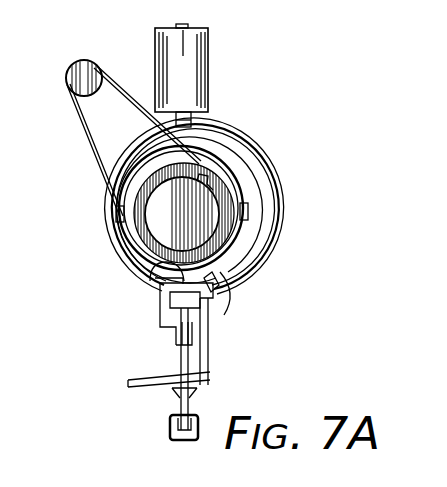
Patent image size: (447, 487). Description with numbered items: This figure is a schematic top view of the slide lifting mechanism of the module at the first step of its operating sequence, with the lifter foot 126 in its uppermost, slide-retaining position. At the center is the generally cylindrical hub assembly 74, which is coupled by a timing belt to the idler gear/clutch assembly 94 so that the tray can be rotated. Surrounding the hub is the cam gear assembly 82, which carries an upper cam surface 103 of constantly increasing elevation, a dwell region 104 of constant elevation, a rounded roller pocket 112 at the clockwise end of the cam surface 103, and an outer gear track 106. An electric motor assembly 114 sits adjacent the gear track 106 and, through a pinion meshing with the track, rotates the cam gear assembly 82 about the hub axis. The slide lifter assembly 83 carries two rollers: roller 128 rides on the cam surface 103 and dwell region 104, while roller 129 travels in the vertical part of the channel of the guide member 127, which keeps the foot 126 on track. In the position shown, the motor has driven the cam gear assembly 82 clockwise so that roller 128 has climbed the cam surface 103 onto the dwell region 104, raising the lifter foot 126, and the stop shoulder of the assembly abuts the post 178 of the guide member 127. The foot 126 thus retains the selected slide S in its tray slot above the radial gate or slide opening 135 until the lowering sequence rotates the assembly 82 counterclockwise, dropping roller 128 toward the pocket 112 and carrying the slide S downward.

The idler gear/clutch assembly 94 is at (101, 55).
The upper cam surface 103 is at (118, 206).
The electric motor assembly 114 is at (208, 62).
The gear track 106 is at (321, 160).
The cam gear assembly 82 is at (259, 197).
The slide lifter assembly 83 is at (226, 262).
The dwell region 104 is at (116, 240).
The roller pocket 112 is at (131, 160).
The hub assembly 74 is at (212, 206).
The roller 128 is at (155, 268).
The roller 129 is at (160, 298).
The post 178 is at (162, 314).
The guide member 127 is at (222, 316).
The radial gate or slide opening 135 is at (180, 352).
The lifter foot 126 is at (153, 390).
The slide S is at (193, 410).